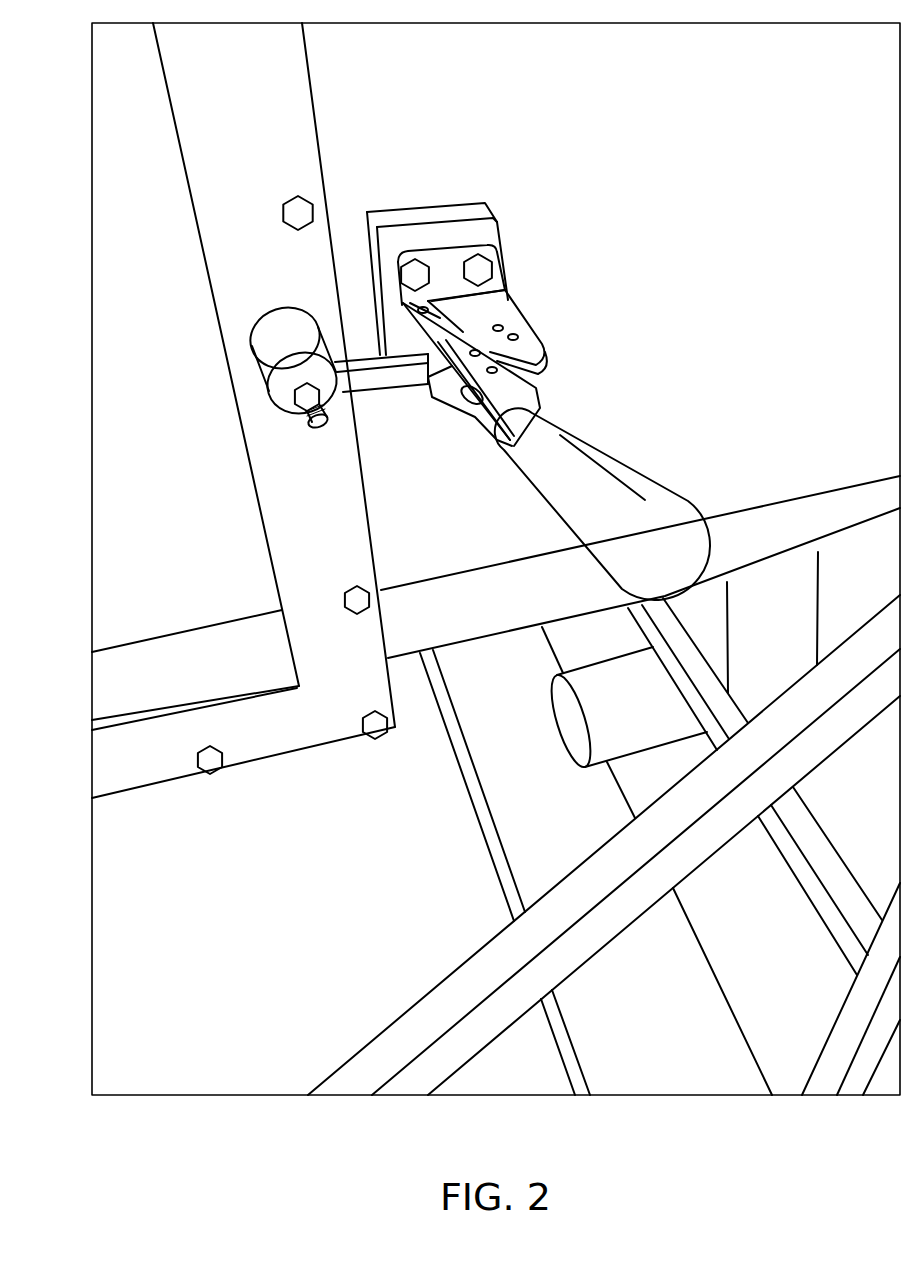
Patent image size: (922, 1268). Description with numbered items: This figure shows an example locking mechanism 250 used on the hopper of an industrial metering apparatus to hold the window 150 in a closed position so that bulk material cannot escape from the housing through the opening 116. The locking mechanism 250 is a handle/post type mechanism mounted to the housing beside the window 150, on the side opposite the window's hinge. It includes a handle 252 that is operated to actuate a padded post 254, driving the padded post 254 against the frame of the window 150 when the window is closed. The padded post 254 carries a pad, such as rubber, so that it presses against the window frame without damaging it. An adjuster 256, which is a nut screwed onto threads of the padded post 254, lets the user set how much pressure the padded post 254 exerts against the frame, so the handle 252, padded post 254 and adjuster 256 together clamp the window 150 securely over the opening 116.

The opening 116 is at (125, 328).
The window 150 is at (336, 114).
The handle/post locking mechanism 250 is at (540, 262).
The handle 252 is at (633, 462).
The padded post 254 is at (317, 433).
The adjuster 256 is at (286, 413).